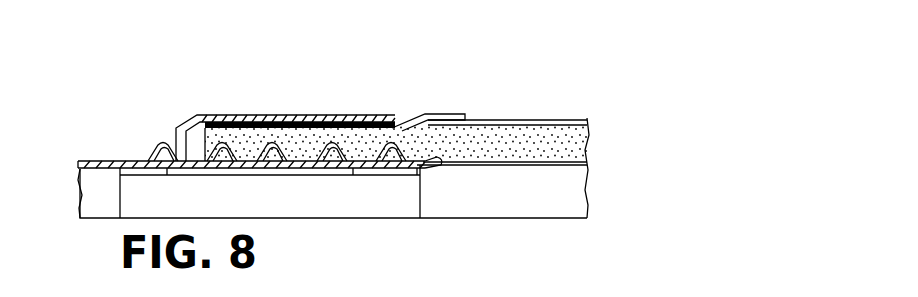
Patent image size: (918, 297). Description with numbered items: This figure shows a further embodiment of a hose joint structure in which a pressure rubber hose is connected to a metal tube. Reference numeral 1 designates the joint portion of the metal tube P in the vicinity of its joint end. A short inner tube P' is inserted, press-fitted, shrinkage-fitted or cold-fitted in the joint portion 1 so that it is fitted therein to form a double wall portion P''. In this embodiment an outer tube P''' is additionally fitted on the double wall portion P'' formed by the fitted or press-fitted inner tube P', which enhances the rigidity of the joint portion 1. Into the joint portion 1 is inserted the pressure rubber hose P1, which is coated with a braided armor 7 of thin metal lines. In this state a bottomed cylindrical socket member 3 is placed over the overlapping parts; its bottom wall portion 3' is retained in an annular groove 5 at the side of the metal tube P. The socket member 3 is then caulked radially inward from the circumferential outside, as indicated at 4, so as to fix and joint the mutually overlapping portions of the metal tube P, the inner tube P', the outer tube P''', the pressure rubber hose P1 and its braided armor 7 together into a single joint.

The metal tube P is at (320, 146).
The short inner tube P' is at (270, 230).
The double wall portion P'' is at (405, 86).
The outer tube P''' is at (352, 83).
The pressure rubber hose P1 is at (538, 134).
The joint portion 1 is at (307, 150).
The bottomed cylindrical socket member 3 is at (396, 106).
The bottom wall portion 3' is at (285, 102).
The caulked fixing portion 4 is at (399, 112).
The annular groove 5 is at (178, 138).
The braided armor 7 is at (502, 123).